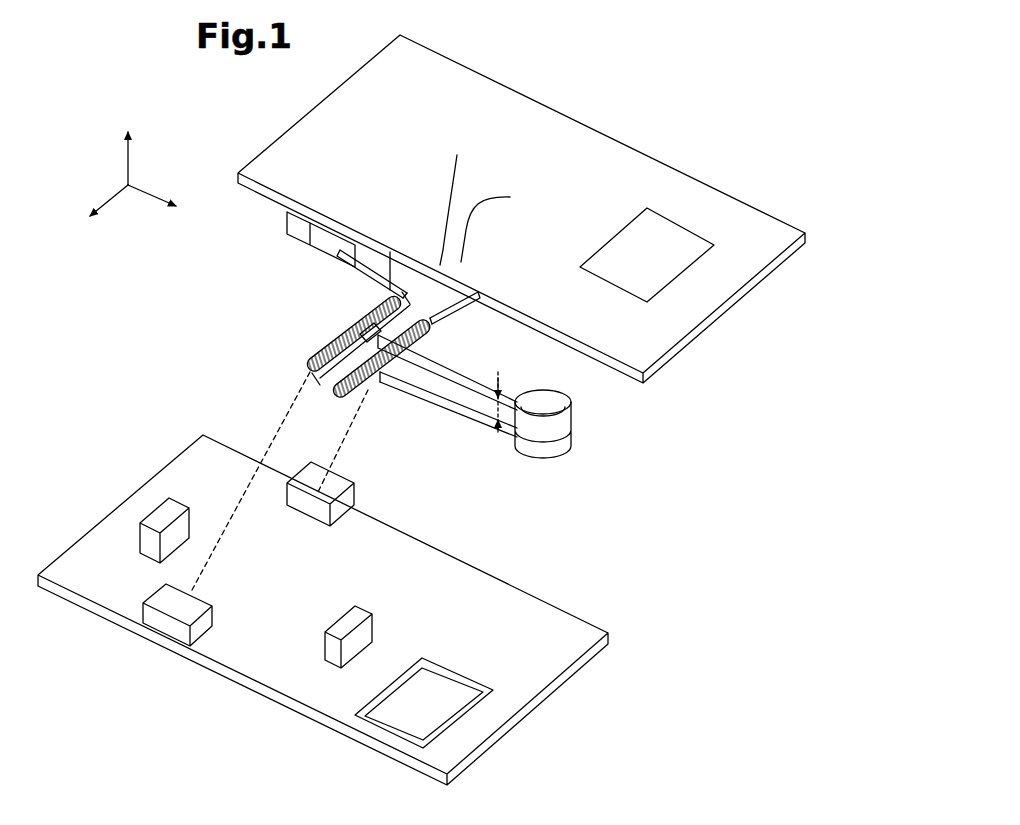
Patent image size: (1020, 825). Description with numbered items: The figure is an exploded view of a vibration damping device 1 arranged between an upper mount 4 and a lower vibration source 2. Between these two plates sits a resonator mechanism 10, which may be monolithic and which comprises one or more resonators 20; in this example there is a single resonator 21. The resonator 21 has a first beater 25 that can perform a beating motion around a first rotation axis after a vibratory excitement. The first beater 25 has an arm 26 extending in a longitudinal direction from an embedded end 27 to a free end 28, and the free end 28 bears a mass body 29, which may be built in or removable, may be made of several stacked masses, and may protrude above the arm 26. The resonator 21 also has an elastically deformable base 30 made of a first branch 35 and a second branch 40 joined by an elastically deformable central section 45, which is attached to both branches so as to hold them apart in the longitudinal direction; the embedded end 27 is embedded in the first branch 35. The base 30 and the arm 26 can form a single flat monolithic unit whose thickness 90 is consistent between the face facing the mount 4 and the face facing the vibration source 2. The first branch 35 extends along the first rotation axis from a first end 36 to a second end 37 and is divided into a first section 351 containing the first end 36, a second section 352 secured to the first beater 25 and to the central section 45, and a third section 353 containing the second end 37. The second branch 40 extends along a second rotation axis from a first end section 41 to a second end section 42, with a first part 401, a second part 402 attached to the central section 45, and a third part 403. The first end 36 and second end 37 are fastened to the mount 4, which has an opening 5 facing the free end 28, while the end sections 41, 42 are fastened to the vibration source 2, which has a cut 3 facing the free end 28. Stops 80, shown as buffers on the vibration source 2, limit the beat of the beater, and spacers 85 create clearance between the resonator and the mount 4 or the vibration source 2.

The vibration damping device 1 is at (606, 100).
The vibration source 2 is at (567, 677).
The cut 3 is at (428, 716).
The mount 4 is at (722, 314).
The opening 5 is at (655, 268).
The resonator mechanism 10 is at (627, 467).
The resonators 20 is at (529, 425).
The resonator 21 is at (582, 466).
The first beater 25 is at (472, 420).
The arm 26 is at (460, 364).
The embedded end 27 is at (397, 372).
The free end 28 is at (536, 458).
The mass body 29 is at (573, 404).
The elastically deformable base 30 is at (264, 384).
The first branch 35 is at (436, 337).
The first end 36 is at (454, 311).
The second end 37 is at (358, 375).
The second branch 40 is at (322, 342).
The first end section 41 is at (392, 270).
The second end section 42 is at (300, 377).
The central section 45 is at (332, 337).
The stop 80 is at (157, 522).
The spacer 85 is at (304, 212).
The thickness 90 is at (498, 372).
The first section 351 is at (405, 270).
The second section 352 is at (410, 372).
The third section 353 is at (381, 372).
The first part 401 is at (370, 297).
The second part 402 is at (366, 315).
The third part 403 is at (318, 352).